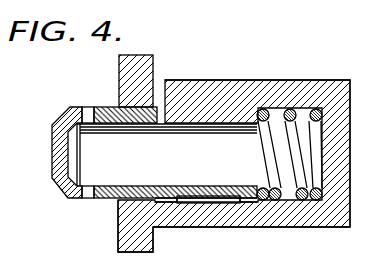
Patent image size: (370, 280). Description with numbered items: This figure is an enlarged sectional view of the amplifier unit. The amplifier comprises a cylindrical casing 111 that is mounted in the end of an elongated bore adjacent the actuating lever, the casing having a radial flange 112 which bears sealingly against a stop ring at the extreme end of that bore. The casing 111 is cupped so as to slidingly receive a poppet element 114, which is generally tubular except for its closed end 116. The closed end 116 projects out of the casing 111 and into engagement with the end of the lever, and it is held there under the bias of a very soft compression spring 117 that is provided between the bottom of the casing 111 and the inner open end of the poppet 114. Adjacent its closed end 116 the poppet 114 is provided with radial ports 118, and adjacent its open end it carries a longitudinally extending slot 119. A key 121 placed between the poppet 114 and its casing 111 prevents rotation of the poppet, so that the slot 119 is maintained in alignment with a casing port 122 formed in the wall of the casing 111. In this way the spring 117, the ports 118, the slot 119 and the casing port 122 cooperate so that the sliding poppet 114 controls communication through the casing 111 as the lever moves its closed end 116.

The cylindrical casing 111 is at (252, 86).
The radial flange 112 is at (143, 57).
The poppet element 114 is at (110, 201).
The closed end 116 is at (54, 152).
The compression spring 117 is at (278, 193).
The radial ports 118 is at (88, 107).
The slot 119 is at (236, 112).
The key 121 is at (219, 203).
The casing port 122 is at (167, 80).